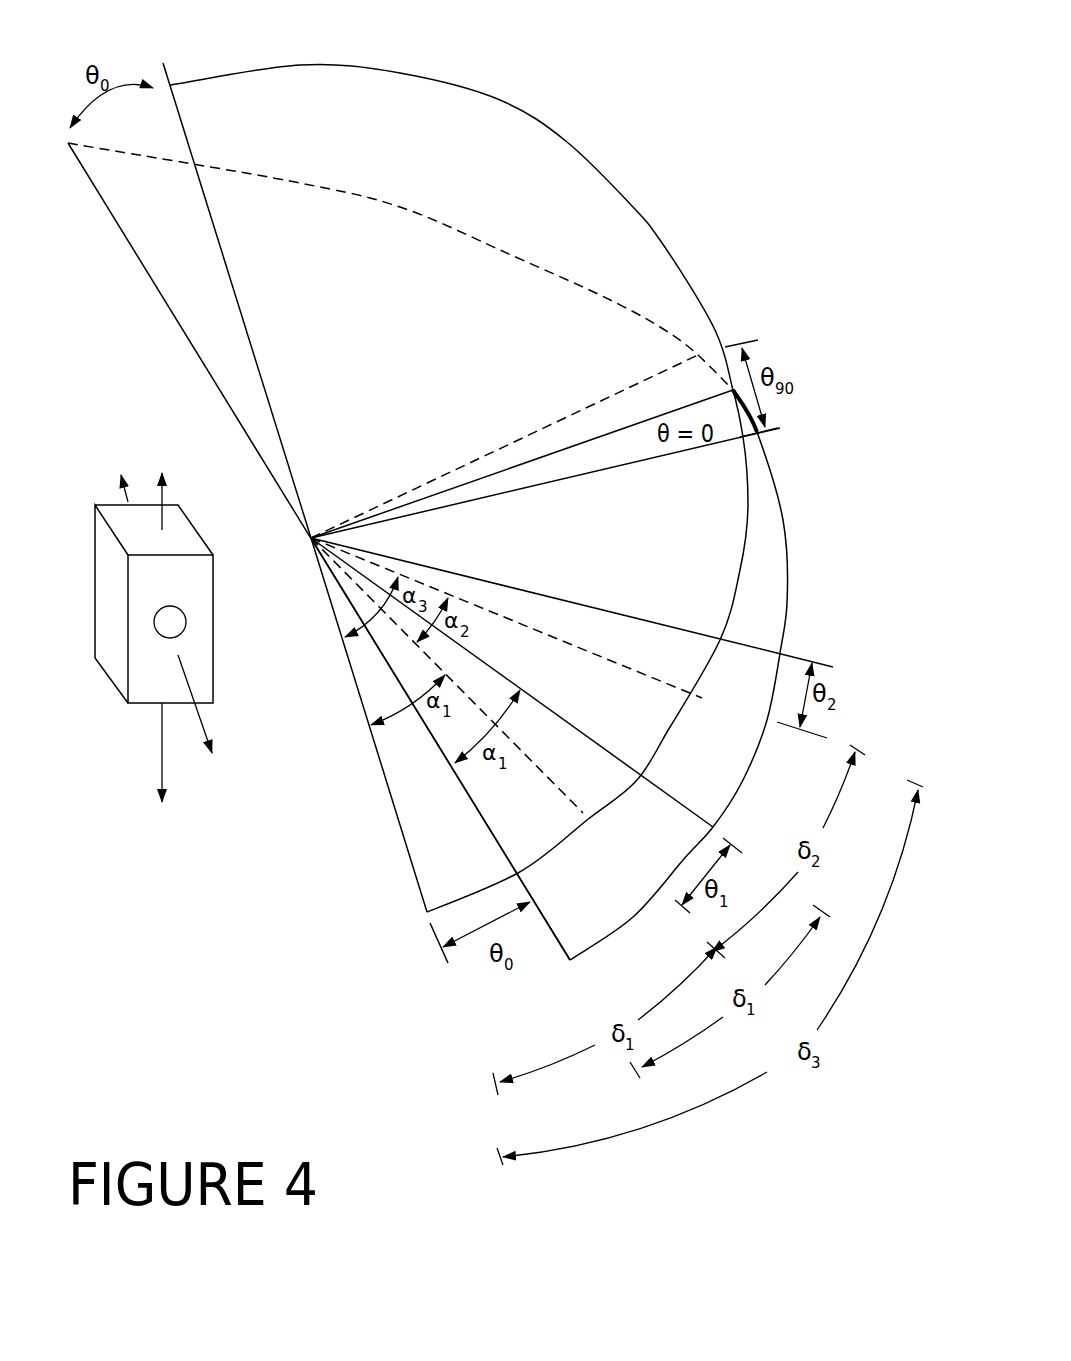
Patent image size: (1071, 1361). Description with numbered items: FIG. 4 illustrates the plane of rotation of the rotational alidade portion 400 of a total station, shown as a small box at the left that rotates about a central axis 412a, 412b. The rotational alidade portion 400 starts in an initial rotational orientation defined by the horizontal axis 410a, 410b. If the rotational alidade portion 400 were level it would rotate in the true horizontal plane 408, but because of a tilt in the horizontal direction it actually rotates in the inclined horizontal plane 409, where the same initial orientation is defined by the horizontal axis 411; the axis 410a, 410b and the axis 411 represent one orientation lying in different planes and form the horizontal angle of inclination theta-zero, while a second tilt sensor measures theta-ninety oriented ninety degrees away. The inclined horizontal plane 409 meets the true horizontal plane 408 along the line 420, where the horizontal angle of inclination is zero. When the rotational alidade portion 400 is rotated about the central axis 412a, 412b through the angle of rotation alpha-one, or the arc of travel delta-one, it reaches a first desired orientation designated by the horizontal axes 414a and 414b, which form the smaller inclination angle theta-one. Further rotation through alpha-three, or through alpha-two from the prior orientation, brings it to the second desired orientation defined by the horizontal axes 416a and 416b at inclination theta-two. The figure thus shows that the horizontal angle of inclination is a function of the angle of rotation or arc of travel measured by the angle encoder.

The rotational alidade portion 400 is at (95, 640).
The true horizontal plane 408 is at (135, 212).
The inclined horizontal plane 409 is at (305, 140).
The horizontal axis 410a is at (163, 52).
The horizontal axis 410b is at (450, 973).
The horizontal axis 411 is at (145, 270).
The central axis 412a is at (161, 485).
The central axis 412b is at (161, 772).
The horizontal axis 414a is at (613, 754).
The horizontal axis 414b is at (578, 812).
The horizontal axis 416a is at (663, 625).
The horizontal axis 416b is at (525, 627).
The line 420 is at (515, 467).